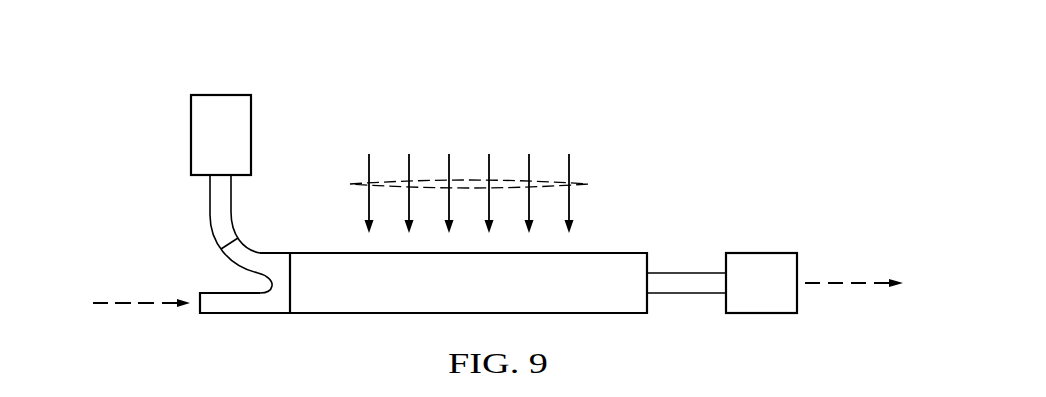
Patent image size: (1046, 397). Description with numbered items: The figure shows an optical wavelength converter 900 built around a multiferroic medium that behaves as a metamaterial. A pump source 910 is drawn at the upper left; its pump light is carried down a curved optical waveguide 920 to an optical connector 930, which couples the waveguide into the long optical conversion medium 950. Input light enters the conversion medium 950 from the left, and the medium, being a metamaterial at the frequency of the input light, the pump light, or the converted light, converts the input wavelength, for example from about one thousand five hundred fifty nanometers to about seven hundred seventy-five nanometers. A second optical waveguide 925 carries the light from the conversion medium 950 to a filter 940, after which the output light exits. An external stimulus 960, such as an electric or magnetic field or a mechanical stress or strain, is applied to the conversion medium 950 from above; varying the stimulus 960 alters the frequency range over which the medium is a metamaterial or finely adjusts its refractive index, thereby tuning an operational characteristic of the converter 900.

The optical wavelength converter 900 is at (301, 56).
The pump source 910 is at (220, 93).
The optical waveguide 920 is at (209, 203).
The optical connector 930 is at (262, 250).
The optical waveguide 925 is at (688, 271).
The filter 940 is at (762, 252).
The optical conversion medium 950 is at (607, 252).
The external stimulus 960 is at (588, 184).